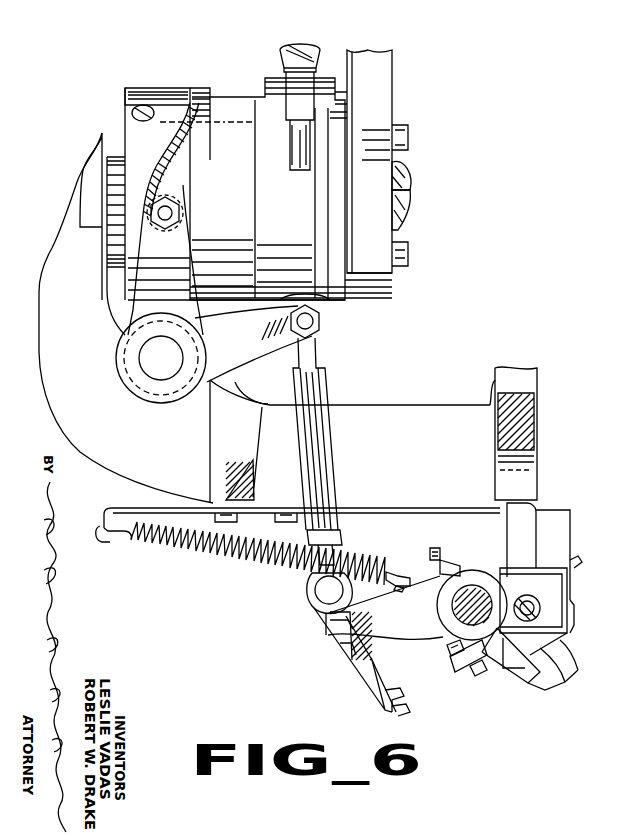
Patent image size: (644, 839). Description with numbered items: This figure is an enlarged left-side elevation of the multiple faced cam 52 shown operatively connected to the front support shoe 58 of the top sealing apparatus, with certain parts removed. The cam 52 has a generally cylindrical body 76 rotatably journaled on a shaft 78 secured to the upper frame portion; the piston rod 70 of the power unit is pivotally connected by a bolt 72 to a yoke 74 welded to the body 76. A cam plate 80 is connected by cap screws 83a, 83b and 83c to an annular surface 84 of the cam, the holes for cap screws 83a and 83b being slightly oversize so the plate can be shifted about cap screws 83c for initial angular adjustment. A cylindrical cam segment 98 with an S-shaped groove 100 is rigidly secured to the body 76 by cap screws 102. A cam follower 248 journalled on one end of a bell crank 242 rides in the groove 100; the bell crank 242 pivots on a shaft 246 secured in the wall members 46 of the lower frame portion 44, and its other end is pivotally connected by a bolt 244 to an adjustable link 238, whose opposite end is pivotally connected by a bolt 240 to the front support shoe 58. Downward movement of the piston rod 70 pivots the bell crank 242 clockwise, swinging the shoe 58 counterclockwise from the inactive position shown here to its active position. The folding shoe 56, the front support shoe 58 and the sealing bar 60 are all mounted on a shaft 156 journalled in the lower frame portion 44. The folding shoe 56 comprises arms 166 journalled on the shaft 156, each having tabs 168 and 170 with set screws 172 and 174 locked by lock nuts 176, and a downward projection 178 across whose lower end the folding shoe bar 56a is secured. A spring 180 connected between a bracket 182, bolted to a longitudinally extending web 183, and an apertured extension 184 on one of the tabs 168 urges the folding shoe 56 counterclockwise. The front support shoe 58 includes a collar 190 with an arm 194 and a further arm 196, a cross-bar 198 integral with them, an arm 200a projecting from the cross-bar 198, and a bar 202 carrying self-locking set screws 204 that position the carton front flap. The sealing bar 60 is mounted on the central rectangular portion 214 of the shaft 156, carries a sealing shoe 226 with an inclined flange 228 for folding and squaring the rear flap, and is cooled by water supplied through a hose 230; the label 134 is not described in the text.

The multiple faced cam 52 is at (135, 80).
The cylindrical cam segment 98 is at (125, 87).
The cap screws 102 is at (132, 113).
The cylindrical body 76 is at (212, 98).
The S-shaped groove 100 is at (212, 97).
The piston rod 70 is at (296, 48).
The bolt 72 is at (352, 97).
The yoke 74 is at (345, 118).
The cap screw 83a is at (408, 133).
The cam plate 80 is at (383, 154).
The cap screw 83b is at (410, 176).
The shaft 78 is at (405, 208).
The cap screw 83c is at (408, 253).
The annular surface 84 is at (380, 292).
The cam follower 248 is at (176, 200).
The bell crank 242 is at (140, 310).
The shaft 246 is at (160, 355).
The wall members 46 is at (205, 352).
The bolt 244 is at (312, 328).
The adjustable link 238 is at (312, 420).
The lower frame portion 44 is at (510, 372).
The member 134 is at (630, 406).
The bracket 182 is at (136, 505).
The longitudinally extending web 183 is at (280, 503).
The spring 180 is at (172, 556).
The apertured extension 184 is at (377, 550).
The arm 196 is at (396, 580).
The set screw 172 is at (436, 548).
The tab 168 is at (441, 566).
The shaft 156 is at (430, 580).
The collar 190 is at (498, 566).
The hose 230 is at (522, 590).
The sealing bar 60 is at (572, 560).
The inclined flange 228 is at (578, 560).
The sealing shoe 226 is at (575, 590).
The arm 166 is at (548, 670).
The projection 178 is at (515, 668).
The lock nut 176 is at (448, 652).
The tab 170 is at (452, 672).
The set screw 174 is at (474, 680).
The folding shoe bar 56a is at (550, 690).
The folding shoe 56 is at (552, 690).
The bolt 240 is at (318, 592).
The front support shoe 58 is at (340, 666).
The cross-bar 198 is at (330, 624).
The arm 200a is at (342, 650).
The bar 202 is at (388, 697).
The self-locking set screws 204 is at (394, 712).
The central rectangular portion 214 is at (455, 597).
The arm 194 is at (430, 632).